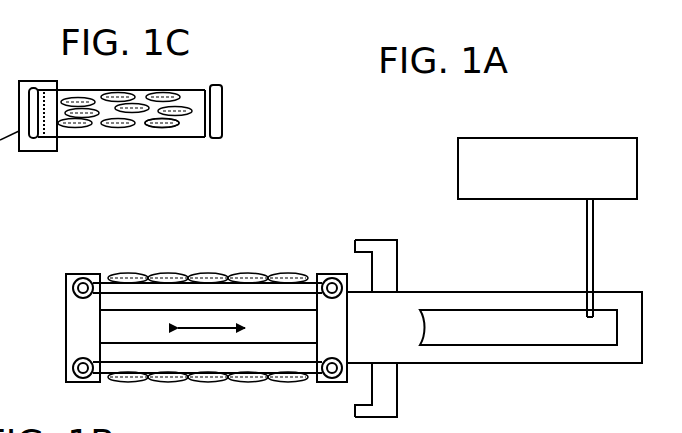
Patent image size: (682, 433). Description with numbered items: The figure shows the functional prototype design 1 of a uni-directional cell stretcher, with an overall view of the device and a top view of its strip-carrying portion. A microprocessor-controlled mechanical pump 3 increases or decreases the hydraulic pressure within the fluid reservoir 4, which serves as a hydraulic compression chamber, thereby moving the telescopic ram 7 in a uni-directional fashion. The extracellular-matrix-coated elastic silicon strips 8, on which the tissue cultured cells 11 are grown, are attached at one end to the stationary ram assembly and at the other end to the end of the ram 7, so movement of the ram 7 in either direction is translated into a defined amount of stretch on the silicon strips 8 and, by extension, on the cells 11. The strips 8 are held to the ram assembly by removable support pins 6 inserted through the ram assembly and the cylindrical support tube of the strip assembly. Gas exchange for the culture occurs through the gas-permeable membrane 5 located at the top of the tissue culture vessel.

In FIG. 1A, the functional prototype design 1 is at (284, 155).
In FIG. 1A, the microprocessor-controlled mechanical pump 3 is at (538, 155).
In FIG. 1A, the fluid reservoir 4 is at (510, 335).
In FIG. 1A, the gas-permeable membrane 5 is at (383, 270).
In FIG. 1A, the removable support pins 6 is at (330, 284).
In FIG. 1A, the ram 7 is at (215, 343).
In FIG. 1C, the extracellular-matrix-coated elastic silicon strips 8 is at (98, 132).
In FIG. 1A, the extracellular-matrix-coated elastic silicon strips 8 is at (210, 278).
In FIG. 1C, the tissue cultured cells 11 is at (157, 125).